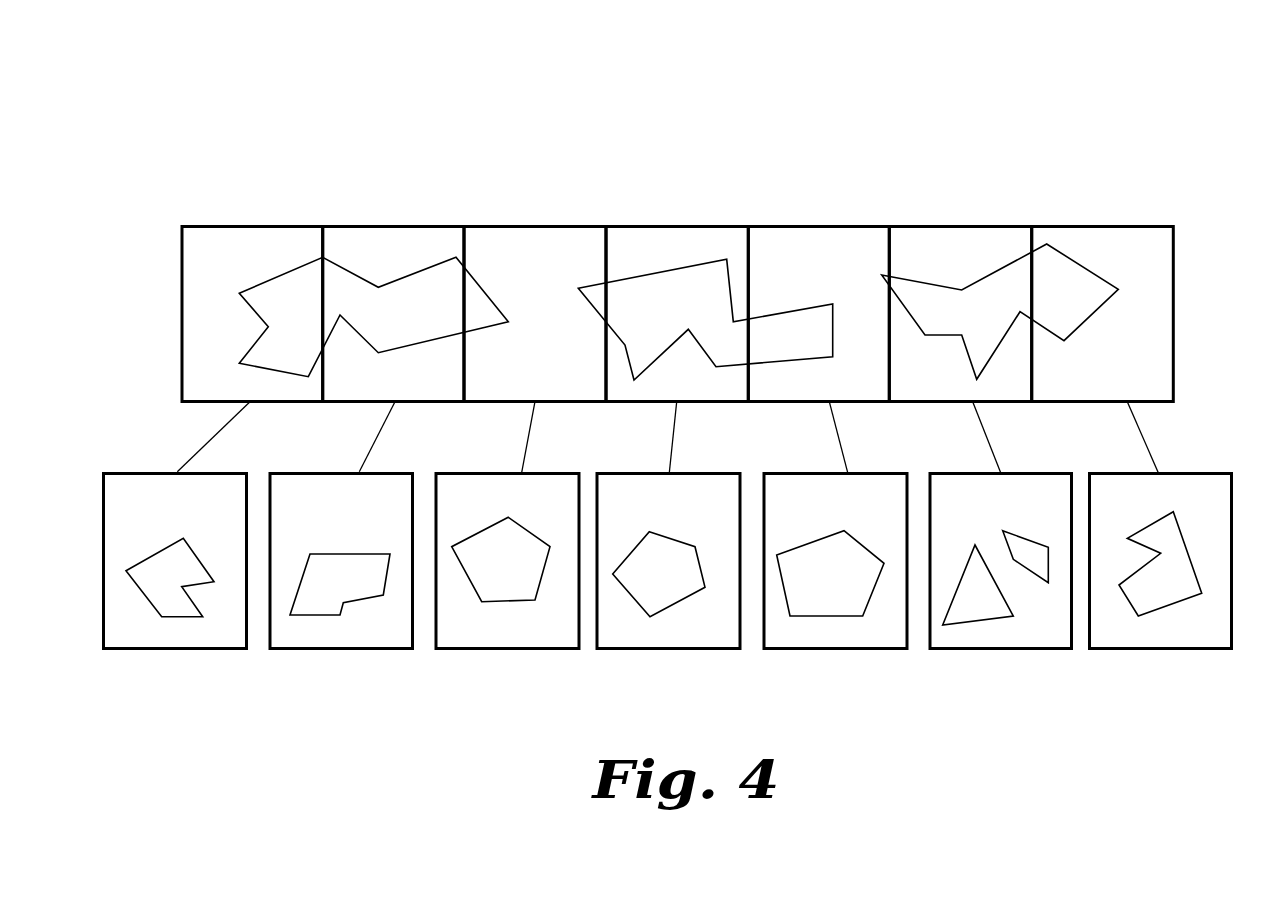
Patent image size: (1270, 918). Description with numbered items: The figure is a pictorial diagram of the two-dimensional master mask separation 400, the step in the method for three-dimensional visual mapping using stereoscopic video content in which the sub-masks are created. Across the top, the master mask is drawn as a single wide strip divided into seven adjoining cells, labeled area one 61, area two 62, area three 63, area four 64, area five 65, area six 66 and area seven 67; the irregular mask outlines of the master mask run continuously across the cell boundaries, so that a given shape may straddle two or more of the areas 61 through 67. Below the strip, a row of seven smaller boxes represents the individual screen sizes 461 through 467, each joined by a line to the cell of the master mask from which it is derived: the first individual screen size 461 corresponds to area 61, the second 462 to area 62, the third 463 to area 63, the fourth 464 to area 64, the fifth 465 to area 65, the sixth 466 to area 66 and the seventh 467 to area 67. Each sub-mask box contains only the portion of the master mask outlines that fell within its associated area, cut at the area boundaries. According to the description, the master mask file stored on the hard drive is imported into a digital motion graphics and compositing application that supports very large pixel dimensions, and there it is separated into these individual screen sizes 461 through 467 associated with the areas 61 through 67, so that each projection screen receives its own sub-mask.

The 2D master mask separation 400 is at (1136, 100).
The area 1 61 is at (240, 226).
The area 2 62 is at (361, 226).
The area 3 63 is at (520, 226).
The area 4 64 is at (672, 226).
The area 5 65 is at (805, 226).
The area 6 66 is at (948, 226).
The area 7 67 is at (1092, 226).
The individual screen size 461 is at (128, 472).
The individual screen size 462 is at (303, 472).
The individual screen size 463 is at (458, 472).
The individual screen size 464 is at (620, 472).
The individual screen size 465 is at (782, 472).
The individual screen size 466 is at (948, 472).
The individual screen size 467 is at (1103, 472).